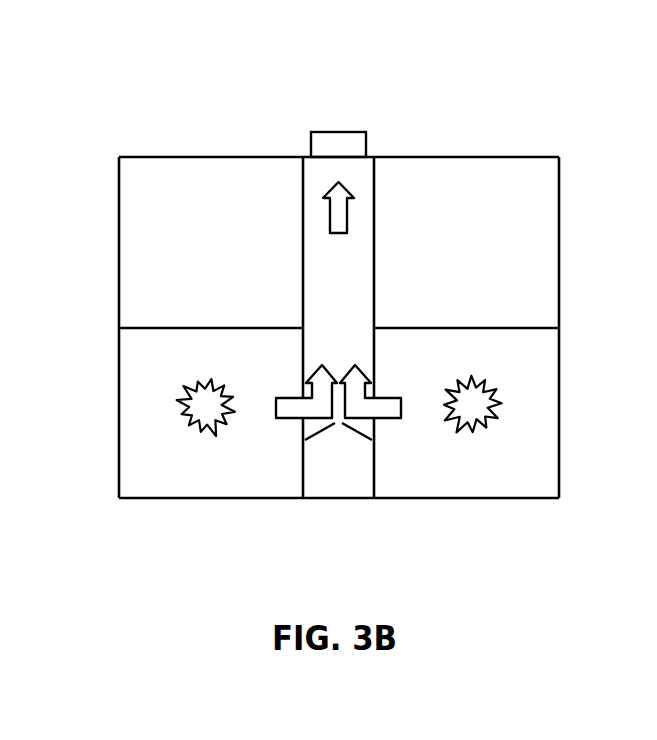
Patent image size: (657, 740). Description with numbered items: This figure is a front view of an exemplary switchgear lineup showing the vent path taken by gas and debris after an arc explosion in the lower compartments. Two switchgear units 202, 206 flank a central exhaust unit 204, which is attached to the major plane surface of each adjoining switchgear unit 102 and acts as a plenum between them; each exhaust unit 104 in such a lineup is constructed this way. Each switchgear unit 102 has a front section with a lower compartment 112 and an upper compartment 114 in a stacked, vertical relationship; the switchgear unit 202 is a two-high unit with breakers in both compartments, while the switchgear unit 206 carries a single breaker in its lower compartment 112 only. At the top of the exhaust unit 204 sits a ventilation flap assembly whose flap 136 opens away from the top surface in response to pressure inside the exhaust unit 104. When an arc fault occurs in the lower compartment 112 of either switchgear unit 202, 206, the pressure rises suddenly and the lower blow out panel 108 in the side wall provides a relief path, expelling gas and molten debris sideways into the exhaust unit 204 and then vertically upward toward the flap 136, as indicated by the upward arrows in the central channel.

The switchgear unit 102 is at (232, 500).
The exhaust unit 104 is at (338, 500).
The first lower blow out panel 108 is at (313, 440).
The lower compartment 112 is at (118, 383).
The upper compartment 114 is at (118, 211).
The flap 136 is at (323, 132).
The switchgear unit 202 is at (212, 140).
The exhaust unit 204 is at (372, 140).
The switchgear unit 206 is at (478, 140).